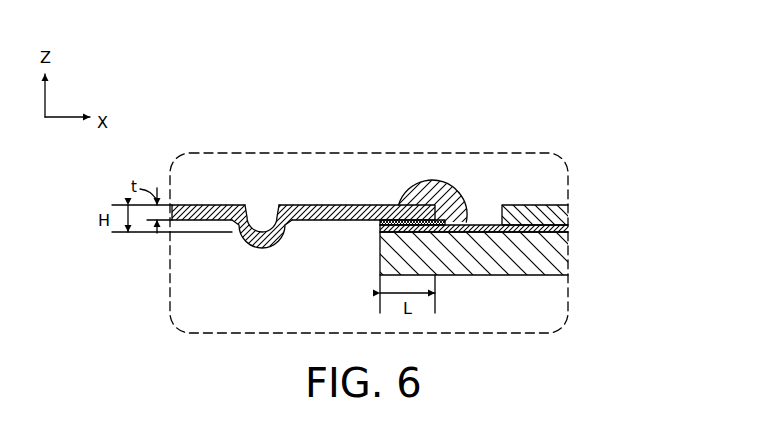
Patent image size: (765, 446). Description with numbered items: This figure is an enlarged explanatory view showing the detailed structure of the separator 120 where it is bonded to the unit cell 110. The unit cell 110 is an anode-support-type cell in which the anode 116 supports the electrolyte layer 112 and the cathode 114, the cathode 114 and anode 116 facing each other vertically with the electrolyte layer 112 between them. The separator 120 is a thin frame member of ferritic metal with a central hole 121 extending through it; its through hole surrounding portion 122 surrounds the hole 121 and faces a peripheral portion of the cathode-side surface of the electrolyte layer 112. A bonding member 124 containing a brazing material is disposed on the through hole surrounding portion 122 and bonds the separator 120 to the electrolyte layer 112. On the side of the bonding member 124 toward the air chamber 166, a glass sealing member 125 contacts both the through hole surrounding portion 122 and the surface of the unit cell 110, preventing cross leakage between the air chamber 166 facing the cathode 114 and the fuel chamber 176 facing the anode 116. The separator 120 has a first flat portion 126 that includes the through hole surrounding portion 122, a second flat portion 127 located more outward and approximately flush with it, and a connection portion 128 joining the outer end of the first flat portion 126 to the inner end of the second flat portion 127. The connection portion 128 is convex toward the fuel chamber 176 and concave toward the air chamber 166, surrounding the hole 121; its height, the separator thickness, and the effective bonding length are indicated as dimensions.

The unit cell 110 is at (657, 203).
The electrolyte layer 112 is at (566, 228).
The cathode 114 is at (566, 222).
The anode 116 is at (566, 250).
The separator 120 is at (418, 98).
The hole 121 is at (445, 208).
The through hole surrounding portion 122 is at (432, 178).
The bonding member 124 is at (380, 224).
The glass sealing member 125 is at (463, 210).
The first flat portion 126 is at (333, 205).
The second flat portion 127 is at (222, 205).
The connection portion 128 is at (271, 222).
The air chamber 166 is at (548, 195).
The fuel chamber 176 is at (549, 308).